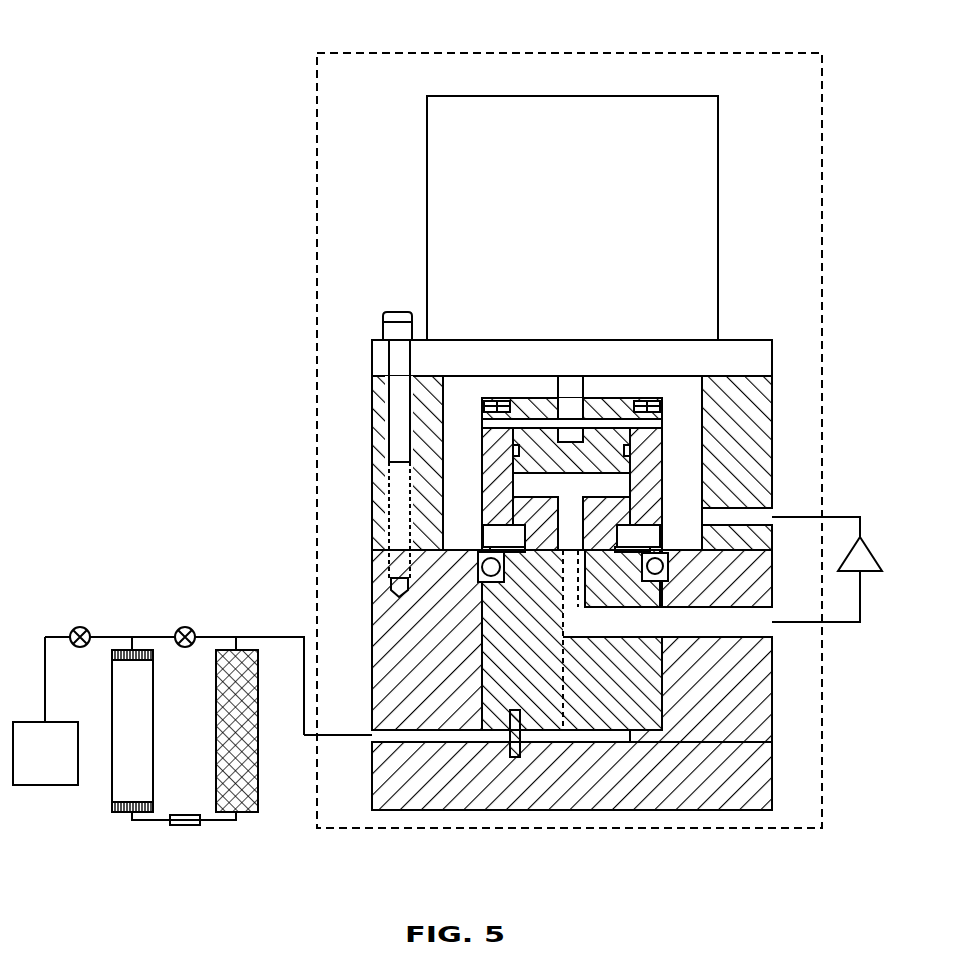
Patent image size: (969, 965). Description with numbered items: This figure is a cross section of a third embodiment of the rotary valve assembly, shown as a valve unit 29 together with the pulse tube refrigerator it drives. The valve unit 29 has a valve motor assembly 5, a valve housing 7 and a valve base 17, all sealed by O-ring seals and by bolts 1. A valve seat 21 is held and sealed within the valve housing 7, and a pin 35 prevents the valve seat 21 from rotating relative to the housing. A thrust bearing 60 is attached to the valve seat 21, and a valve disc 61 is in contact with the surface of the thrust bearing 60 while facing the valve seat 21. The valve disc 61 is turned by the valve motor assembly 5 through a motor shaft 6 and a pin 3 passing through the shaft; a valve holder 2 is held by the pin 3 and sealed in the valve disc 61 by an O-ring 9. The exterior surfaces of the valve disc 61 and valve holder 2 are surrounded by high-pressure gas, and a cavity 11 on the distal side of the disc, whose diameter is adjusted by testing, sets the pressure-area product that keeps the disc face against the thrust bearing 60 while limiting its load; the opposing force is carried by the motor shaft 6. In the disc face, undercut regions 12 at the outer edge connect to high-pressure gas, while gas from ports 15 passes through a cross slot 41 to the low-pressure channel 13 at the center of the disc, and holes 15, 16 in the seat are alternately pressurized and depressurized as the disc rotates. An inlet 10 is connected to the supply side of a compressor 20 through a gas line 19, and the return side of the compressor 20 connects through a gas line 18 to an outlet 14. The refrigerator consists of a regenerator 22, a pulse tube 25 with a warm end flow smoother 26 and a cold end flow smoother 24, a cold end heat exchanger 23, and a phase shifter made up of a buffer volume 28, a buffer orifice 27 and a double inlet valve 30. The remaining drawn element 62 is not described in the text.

The bolts 1 is at (400, 312).
The valve holder 2 is at (497, 400).
The pin 3 is at (481, 422).
The valve motor assembly 5 is at (718, 218).
The motor shaft 6 is at (587, 388).
The valve housing 7 is at (774, 441).
The O-ring 9 is at (658, 418).
The inlet 10 is at (774, 511).
The cavity 11 is at (620, 488).
The regions 12 is at (493, 540).
The channel 13 is at (605, 579).
The outlet 14 is at (773, 628).
The ports 15 is at (604, 686).
The holes 16 is at (372, 730).
The valve base 17 is at (775, 713).
The gas line 18 is at (850, 623).
The gas line 19 is at (850, 517).
The compressor 20 is at (868, 542).
The valve seat 21 is at (663, 686).
The regenerator 22 is at (258, 774).
The cold end heat exchanger 23 is at (183, 826).
The cold end flow smoother 24 is at (153, 803).
The pulse tube 25 is at (153, 730).
The warm end flow smoother 26 is at (153, 655).
The buffer orifice 27 is at (78, 626).
The buffer volume 28 is at (33, 766).
The valve unit 29 is at (565, 53).
The double inlet valve 30 is at (183, 626).
The pin 35 is at (507, 748).
The cross slot 41 is at (573, 543).
The thrust bearing 60 is at (470, 592).
The valve disc 61 is at (477, 465).
The piston side wall 62 is at (663, 408).